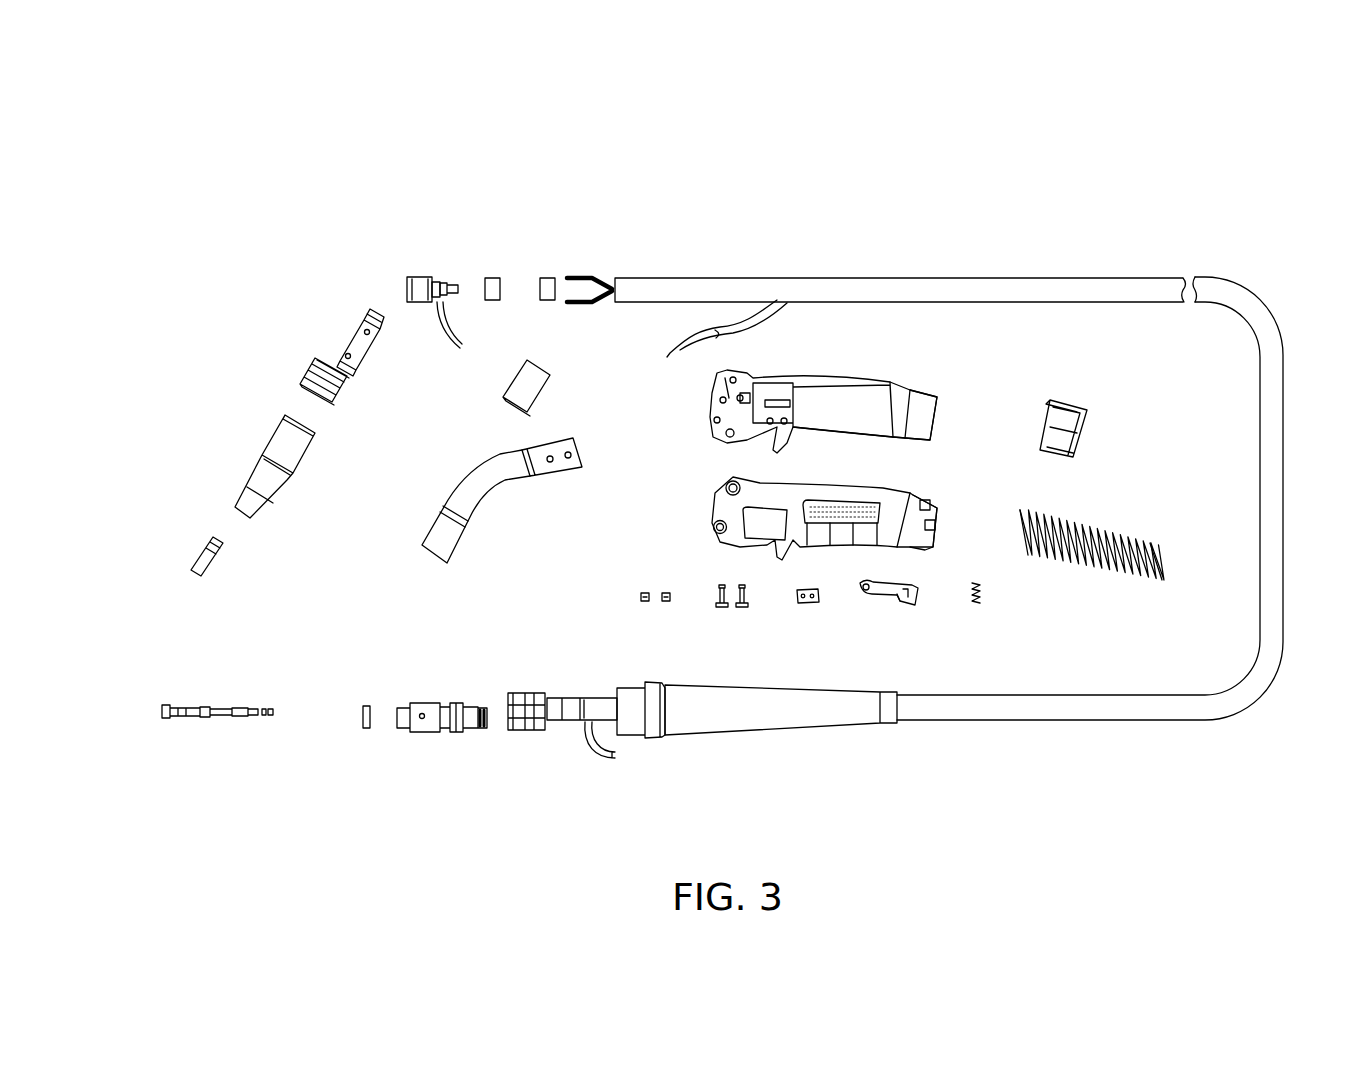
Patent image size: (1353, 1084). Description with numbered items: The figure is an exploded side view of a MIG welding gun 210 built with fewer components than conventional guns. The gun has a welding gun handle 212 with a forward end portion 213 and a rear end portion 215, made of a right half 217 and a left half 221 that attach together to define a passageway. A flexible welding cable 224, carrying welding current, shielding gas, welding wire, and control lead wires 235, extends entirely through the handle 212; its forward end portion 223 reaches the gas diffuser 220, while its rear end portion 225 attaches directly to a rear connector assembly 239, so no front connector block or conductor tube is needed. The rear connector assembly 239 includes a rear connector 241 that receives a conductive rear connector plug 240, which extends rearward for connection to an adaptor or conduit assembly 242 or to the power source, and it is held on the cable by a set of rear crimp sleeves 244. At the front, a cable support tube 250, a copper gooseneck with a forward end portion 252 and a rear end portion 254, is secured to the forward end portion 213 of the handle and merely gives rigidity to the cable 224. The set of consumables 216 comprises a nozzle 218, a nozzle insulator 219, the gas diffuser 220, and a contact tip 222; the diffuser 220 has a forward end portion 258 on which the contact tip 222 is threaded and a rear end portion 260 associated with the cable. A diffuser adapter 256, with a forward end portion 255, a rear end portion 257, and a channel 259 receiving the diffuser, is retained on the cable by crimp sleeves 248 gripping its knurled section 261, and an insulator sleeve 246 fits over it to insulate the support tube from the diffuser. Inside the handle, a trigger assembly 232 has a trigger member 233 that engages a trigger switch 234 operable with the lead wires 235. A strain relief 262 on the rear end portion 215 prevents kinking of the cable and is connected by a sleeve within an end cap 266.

The MIG welding gun 210 is at (1077, 232).
The welding gun handle 212 is at (850, 357).
The forward end portion of the handle 213 is at (732, 378).
The rear end portion of the handle 215 is at (922, 390).
The consumable components 216 is at (205, 378).
The right half of the handle 217 is at (710, 410).
The nozzle 218 is at (262, 440).
The nozzle insulator 219 is at (302, 378).
The gas diffuser 220 is at (342, 338).
The left half of the handle 221 is at (722, 528).
The contact tip 222 is at (200, 545).
The forward end portion of the cable 223 is at (655, 277).
The flexible welding cable 224 is at (1262, 405).
The rear end portion of the cable 225 is at (605, 722).
The trigger assembly 232 is at (848, 625).
The trigger member 233 is at (918, 587).
The trigger switch 234 is at (800, 602).
The control lead wires 235 is at (667, 355).
The rear connector assembly 239 is at (487, 647).
The rear connector plug 240 is at (420, 700).
The rear connector 241 is at (535, 732).
The adaptor or conduit assembly 242 is at (190, 705).
The rear crimp sleeves 244 is at (575, 700).
The insulator sleeve 246 is at (508, 392).
The crimp sleeves 248 is at (547, 278).
The cable support tube 250 is at (448, 510).
The forward end portion of the cable support tube 252 is at (457, 500).
The rear end portion of the cable support tube 254 is at (545, 478).
The forward end portion of the diffuser adapter 255 is at (420, 277).
The diffuser adapter 256 is at (437, 280).
The rear end portion of the diffuser adapter 257 is at (450, 284).
The forward end portion of the gas diffuser 258 is at (352, 370).
The channel 259 is at (407, 285).
The rear end portion of the gas diffuser 260 is at (372, 318).
The knurled section 261 is at (473, 334).
The strain relief 262 is at (1032, 510).
The end cap 266 is at (1050, 400).